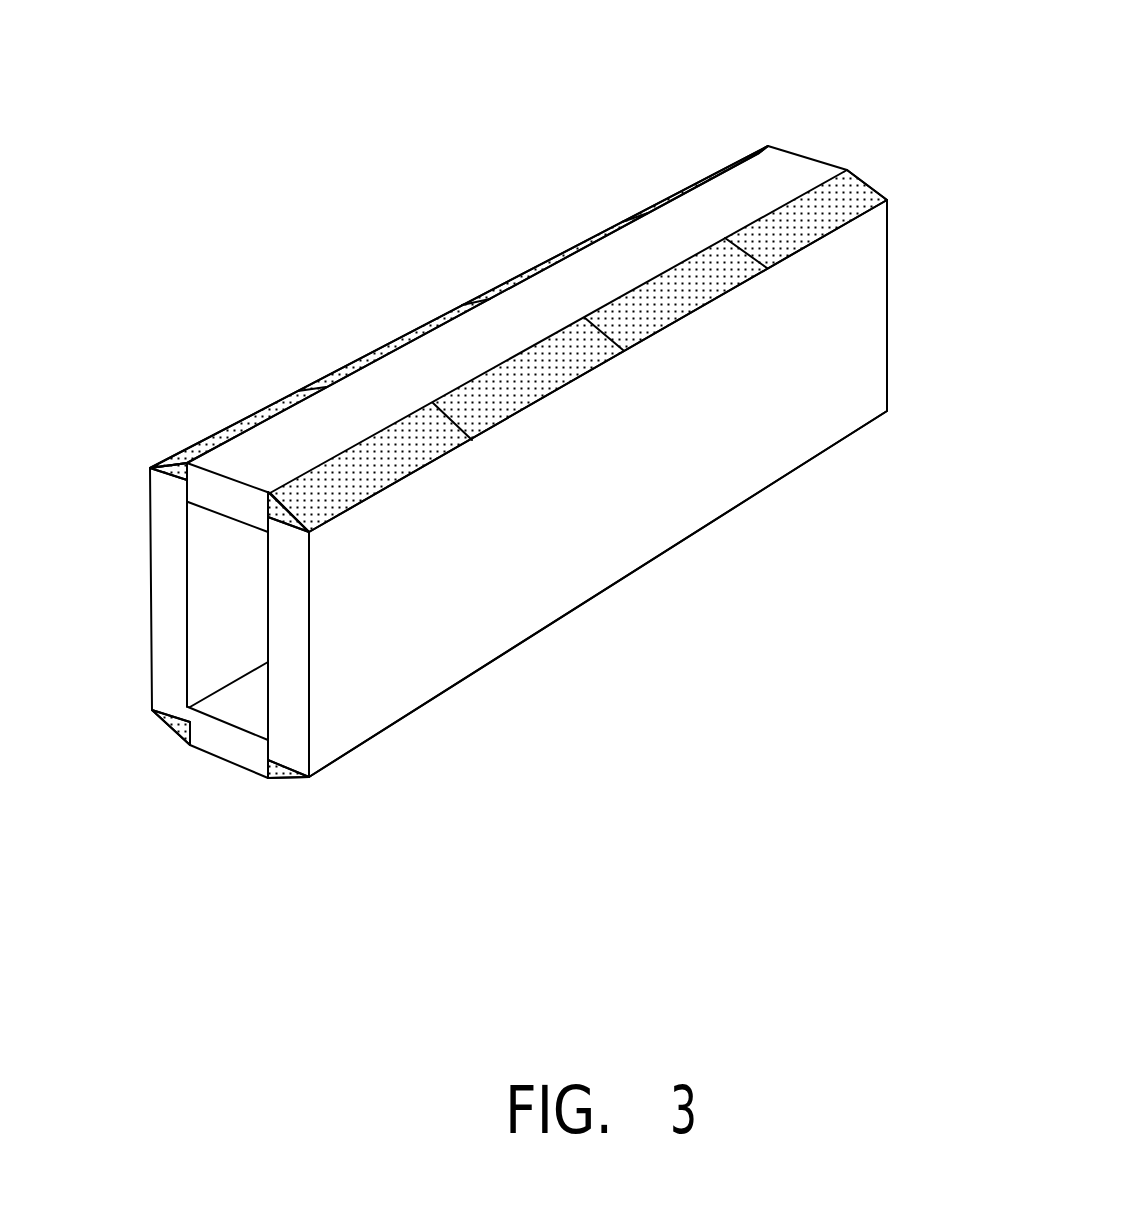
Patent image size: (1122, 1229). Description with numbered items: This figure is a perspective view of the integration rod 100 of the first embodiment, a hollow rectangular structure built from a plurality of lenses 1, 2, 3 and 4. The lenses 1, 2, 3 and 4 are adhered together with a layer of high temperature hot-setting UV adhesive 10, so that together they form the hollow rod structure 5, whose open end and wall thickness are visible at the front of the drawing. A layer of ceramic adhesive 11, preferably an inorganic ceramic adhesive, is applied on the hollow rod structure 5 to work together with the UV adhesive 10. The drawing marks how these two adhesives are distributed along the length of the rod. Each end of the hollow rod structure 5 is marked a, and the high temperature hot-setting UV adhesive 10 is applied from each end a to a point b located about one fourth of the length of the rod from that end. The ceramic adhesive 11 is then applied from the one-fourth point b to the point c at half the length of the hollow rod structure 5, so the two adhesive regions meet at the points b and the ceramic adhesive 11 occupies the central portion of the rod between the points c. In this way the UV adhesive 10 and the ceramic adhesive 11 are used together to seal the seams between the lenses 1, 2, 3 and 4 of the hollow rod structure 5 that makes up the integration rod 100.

The integration rod 100 is at (509, 424).
The lens 1 is at (357, 385).
The lens 2 is at (163, 602).
The lens 3 is at (228, 745).
The lens 4 is at (552, 593).
The hollow rod structure 5 is at (782, 438).
The high temperature hot-setting UV adhesive 10 is at (667, 192).
The ceramic adhesive 11 is at (377, 352).
The end of the hollow rod structure a is at (516, 472).
The one-fourth-length point b is at (527, 452).
The half-length point c is at (549, 439).